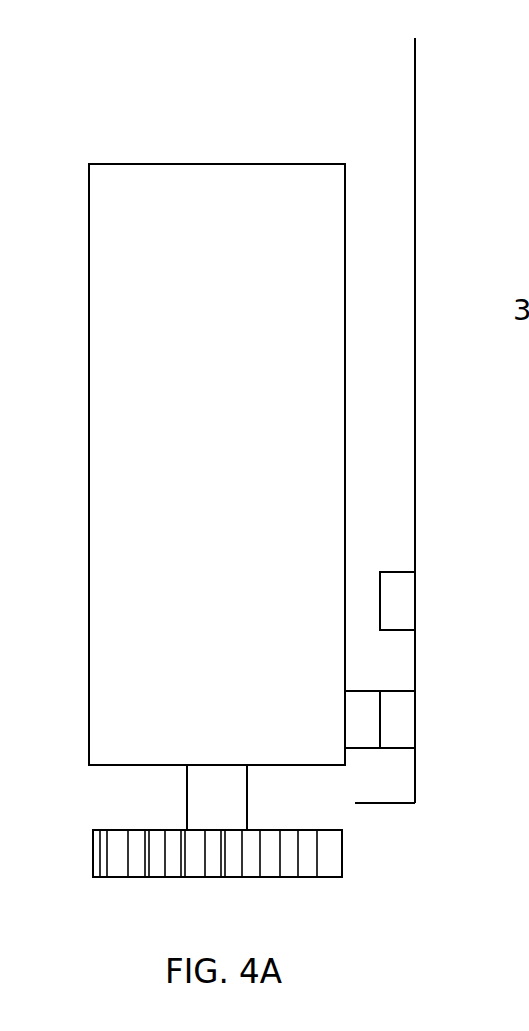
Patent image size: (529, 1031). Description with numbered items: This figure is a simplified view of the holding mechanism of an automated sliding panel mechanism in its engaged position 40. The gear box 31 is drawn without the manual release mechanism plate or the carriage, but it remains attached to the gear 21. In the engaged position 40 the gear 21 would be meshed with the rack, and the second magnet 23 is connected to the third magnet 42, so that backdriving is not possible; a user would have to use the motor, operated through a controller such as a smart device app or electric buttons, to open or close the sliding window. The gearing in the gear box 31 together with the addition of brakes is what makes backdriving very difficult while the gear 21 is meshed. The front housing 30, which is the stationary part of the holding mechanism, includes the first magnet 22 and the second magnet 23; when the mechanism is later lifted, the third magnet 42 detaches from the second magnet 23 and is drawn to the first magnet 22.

The engaged position 40 is at (146, 98).
The front housing 30 is at (416, 220).
The gear box 31 is at (128, 553).
The first magnet 22 is at (402, 610).
The second magnet 23 is at (403, 732).
The third magnet 42 is at (368, 740).
The gear 21 is at (118, 873).